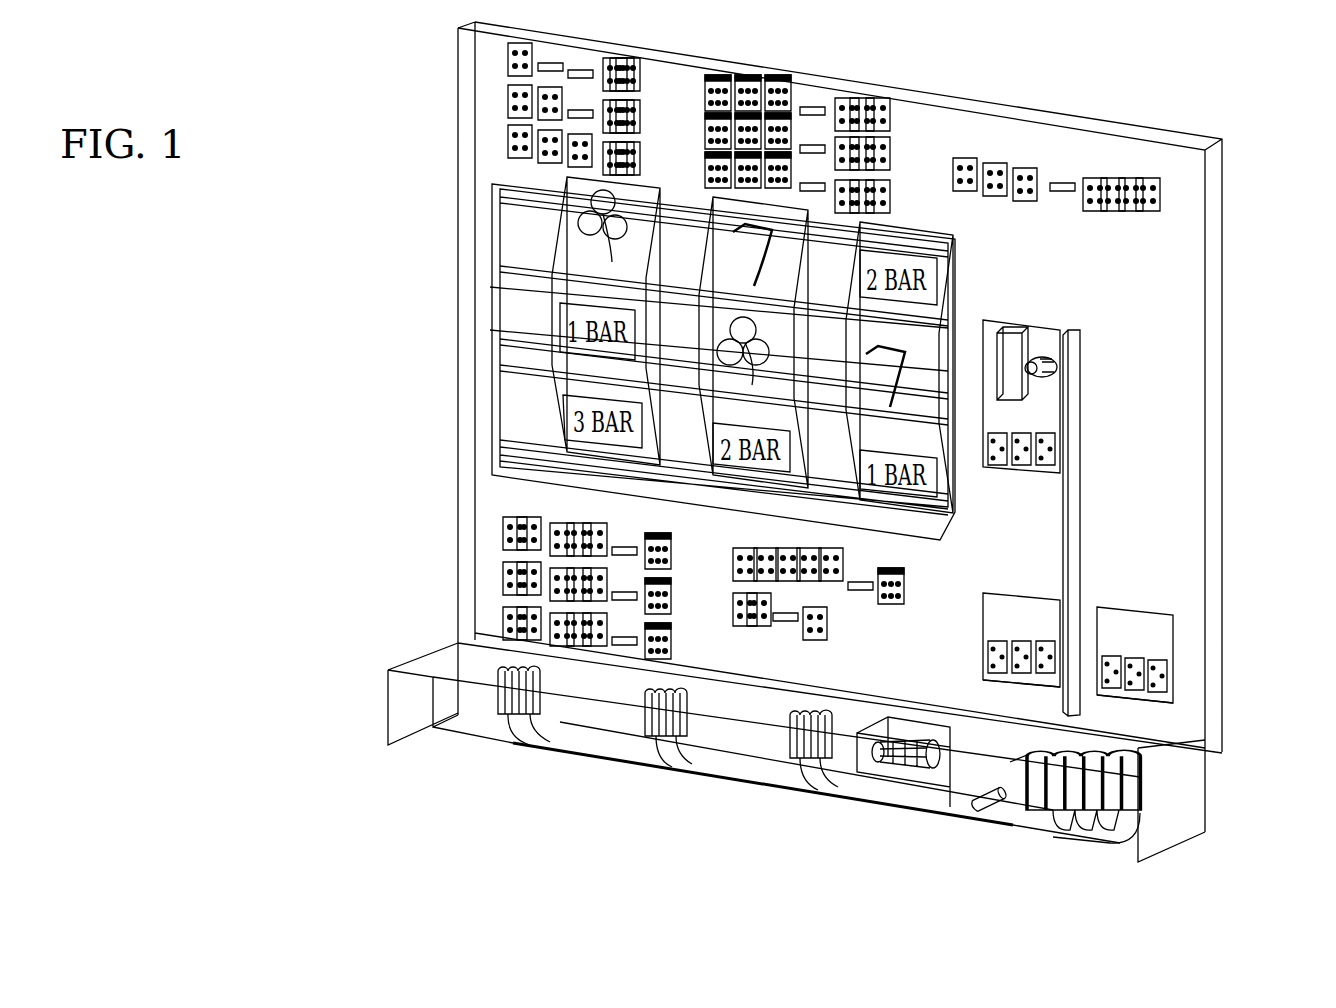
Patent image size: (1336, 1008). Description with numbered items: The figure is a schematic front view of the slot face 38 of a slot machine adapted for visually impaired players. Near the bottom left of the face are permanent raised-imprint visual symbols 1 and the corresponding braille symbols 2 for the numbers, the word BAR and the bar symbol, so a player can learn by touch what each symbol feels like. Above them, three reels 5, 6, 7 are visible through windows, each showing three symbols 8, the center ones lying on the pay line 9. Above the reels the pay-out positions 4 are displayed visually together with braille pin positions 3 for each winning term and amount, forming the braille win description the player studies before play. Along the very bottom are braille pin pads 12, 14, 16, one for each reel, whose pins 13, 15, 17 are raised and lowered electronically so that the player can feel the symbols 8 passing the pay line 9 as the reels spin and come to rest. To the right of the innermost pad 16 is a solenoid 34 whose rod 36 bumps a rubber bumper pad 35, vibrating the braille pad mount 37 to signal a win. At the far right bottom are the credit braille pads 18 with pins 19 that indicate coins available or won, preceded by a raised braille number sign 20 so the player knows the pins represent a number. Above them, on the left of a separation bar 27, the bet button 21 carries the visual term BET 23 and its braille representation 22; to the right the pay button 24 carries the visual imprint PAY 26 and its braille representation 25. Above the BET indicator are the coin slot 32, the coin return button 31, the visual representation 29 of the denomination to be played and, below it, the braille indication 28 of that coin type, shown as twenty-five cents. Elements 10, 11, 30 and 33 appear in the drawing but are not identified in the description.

The visual symbols 1 is at (500, 620).
The braille symbols 2 is at (503, 555).
The braille pin positions 3 is at (505, 150).
The pay-out positions 4 is at (505, 80).
The first reel 5 is at (557, 450).
The second reel 6 is at (690, 388).
The third reel 7 is at (838, 317).
The symbols 8 is at (583, 207).
The pay line 9 is at (490, 330).
The reel window frame 10 is at (490, 470).
The pay line indicator 11 is at (490, 287).
The braille pin pad 12 is at (432, 727).
The pins 13 is at (498, 663).
The braille pin pad 14 is at (643, 685).
The pins 15 is at (643, 733).
The braille pin pad 16 is at (785, 707).
The pins 17 is at (805, 750).
The braille pads 18 is at (1140, 780).
The braille pins 19 is at (1053, 812).
The braille number sign 20 is at (1050, 778).
The bet button 21 is at (1047, 688).
The braille pin representation of BET 22 is at (1010, 668).
The visual term BET 23 is at (987, 630).
The pay button 24 is at (1135, 703).
The braille pin representation of PAY 25 is at (1173, 680).
The visual imprint PAY 26 is at (1173, 645).
The separation bar 27 is at (1073, 548).
The braille indication of coin type 28 is at (1057, 463).
The visual representation of money denomination 29 is at (1057, 433).
The coin slot housing 30 is at (1043, 325).
The coin return button 31 is at (1057, 371).
The coin slot 32 is at (1022, 400).
The coin rail 33 is at (690, 775).
The solenoid 34 is at (868, 777).
The bumper pad 35 is at (808, 758).
The rod 36 is at (840, 762).
The braille pad mount 37 is at (1170, 847).
The slot face 38 is at (1208, 250).